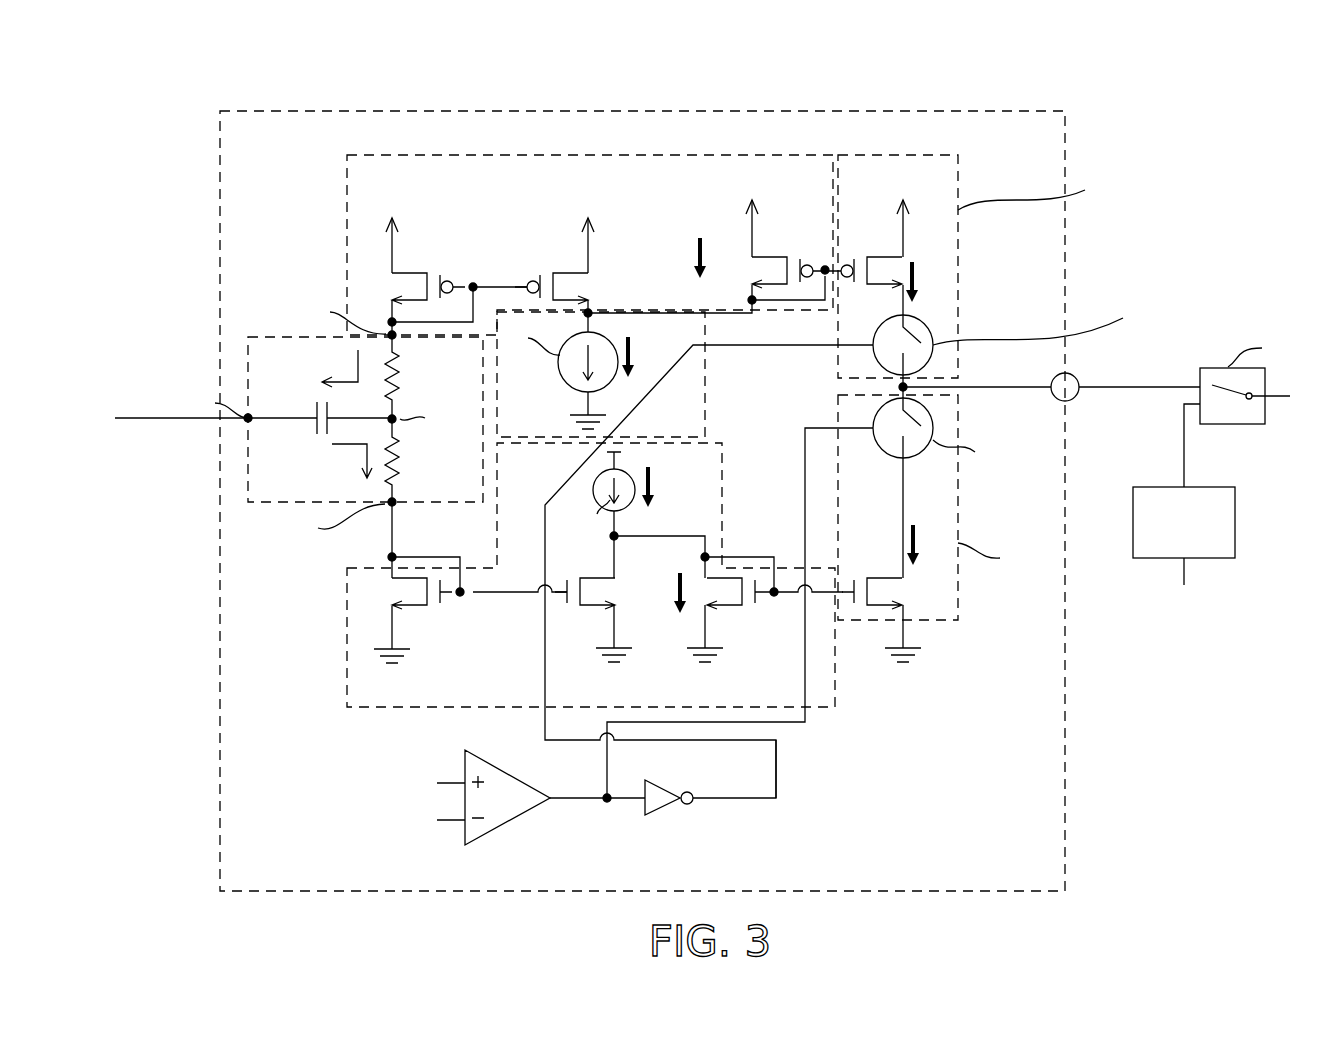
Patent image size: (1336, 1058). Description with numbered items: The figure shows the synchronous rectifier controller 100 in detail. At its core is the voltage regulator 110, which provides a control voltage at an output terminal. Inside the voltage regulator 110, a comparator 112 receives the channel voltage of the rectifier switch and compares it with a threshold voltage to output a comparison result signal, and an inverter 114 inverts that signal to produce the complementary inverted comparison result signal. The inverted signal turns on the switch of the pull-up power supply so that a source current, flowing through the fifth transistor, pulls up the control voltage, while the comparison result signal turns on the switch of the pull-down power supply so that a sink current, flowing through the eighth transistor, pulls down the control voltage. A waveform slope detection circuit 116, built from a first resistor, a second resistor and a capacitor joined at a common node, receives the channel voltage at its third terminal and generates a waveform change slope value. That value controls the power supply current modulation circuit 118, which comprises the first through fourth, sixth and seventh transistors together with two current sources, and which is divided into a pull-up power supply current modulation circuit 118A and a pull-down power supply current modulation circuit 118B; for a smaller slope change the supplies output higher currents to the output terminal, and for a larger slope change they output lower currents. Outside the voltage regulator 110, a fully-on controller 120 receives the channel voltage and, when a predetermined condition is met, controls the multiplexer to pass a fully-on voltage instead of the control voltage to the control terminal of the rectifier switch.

The synchronous rectifier controller 100 is at (1135, 126).
The voltage regulator 110 is at (221, 185).
The comparator 112 is at (503, 825).
The inverter 114 is at (672, 808).
The waveform slope detection circuit 116 is at (283, 336).
The power supply current modulation circuit 118 is at (540, 424).
The pull-up power supply current modulation circuit 118A is at (347, 178).
The pull-down power supply current modulation circuit 118B is at (347, 628).
The fully-on controller 120 is at (1163, 541).